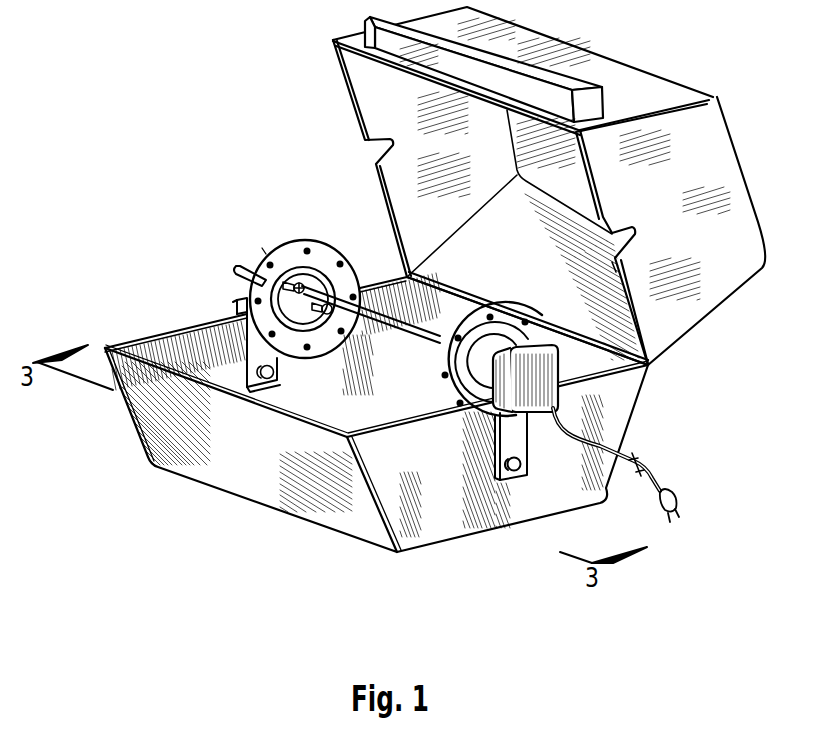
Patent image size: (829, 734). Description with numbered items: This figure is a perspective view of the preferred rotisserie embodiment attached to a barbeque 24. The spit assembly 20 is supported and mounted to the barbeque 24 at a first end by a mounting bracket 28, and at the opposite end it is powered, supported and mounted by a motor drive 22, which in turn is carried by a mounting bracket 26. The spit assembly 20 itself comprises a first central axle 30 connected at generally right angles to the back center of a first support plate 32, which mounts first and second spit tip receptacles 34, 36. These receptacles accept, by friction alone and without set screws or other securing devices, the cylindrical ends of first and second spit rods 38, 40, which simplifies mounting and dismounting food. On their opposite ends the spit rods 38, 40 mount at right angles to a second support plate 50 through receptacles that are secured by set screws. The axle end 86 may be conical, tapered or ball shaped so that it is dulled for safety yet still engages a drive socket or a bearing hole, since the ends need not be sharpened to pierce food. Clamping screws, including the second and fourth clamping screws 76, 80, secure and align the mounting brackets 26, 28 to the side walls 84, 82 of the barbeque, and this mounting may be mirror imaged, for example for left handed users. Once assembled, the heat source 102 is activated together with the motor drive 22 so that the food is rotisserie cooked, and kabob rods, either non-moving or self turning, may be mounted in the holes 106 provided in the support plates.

The spit assembly 20 is at (262, 250).
The motor drive 22 is at (575, 487).
The barbeque 24 is at (603, 373).
The mounting bracket 26 is at (538, 482).
The mounting bracket 28 is at (236, 300).
The first central axle 30 is at (252, 262).
The first support plate 32 is at (240, 288).
The first spit tip receptacle 34 is at (286, 358).
The second spit tip receptacle 36 is at (325, 356).
The first spit rod 38 is at (395, 322).
The second spit rod 40 is at (438, 366).
The second support plate 50 is at (501, 470).
The second clamping screw 76 is at (264, 378).
The fourth clamping screw 80 is at (683, 527).
The side wall 82 is at (236, 392).
The side wall 84 is at (632, 415).
The axle end 86 is at (245, 268).
The heat source 102 is at (348, 342).
The holes 106 is at (445, 375).